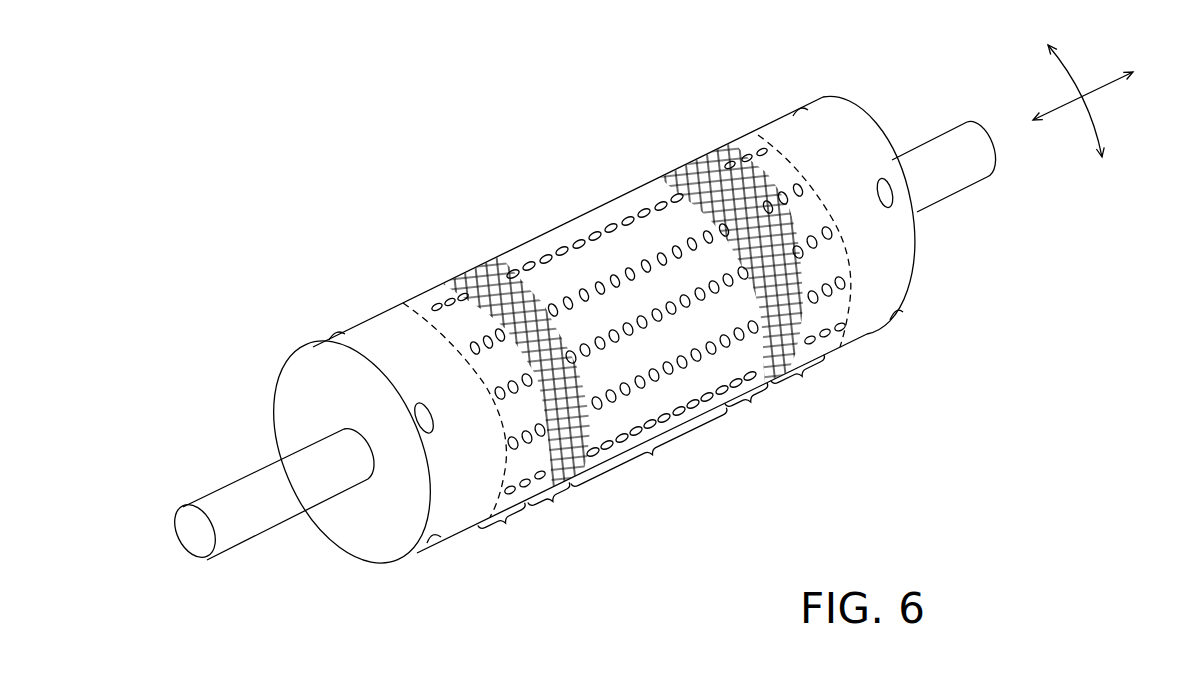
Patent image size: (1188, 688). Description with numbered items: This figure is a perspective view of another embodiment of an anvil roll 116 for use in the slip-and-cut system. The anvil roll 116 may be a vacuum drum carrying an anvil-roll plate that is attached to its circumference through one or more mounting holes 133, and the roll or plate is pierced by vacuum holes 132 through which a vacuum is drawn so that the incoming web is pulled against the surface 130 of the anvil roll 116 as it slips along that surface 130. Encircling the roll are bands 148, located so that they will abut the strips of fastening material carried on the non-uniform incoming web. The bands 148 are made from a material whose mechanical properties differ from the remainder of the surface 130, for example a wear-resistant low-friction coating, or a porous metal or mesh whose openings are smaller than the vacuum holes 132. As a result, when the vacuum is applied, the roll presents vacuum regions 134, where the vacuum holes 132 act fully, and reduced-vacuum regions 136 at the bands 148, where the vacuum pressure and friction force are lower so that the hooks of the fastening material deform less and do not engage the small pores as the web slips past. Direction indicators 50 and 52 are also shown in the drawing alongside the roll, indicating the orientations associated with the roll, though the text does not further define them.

The anvil roll 116 is at (377, 190).
The surface of the anvil roll 130 is at (367, 334).
The mounting holes 133 is at (800, 100).
The vacuum holes 132 is at (545, 252).
The bands 148 is at (468, 287).
The vacuum regions 134 is at (654, 456).
The reduced-vacuum regions 136 is at (657, 460).
The cross-machine direction 50 is at (1110, 88).
The machine direction 52 is at (1097, 125).